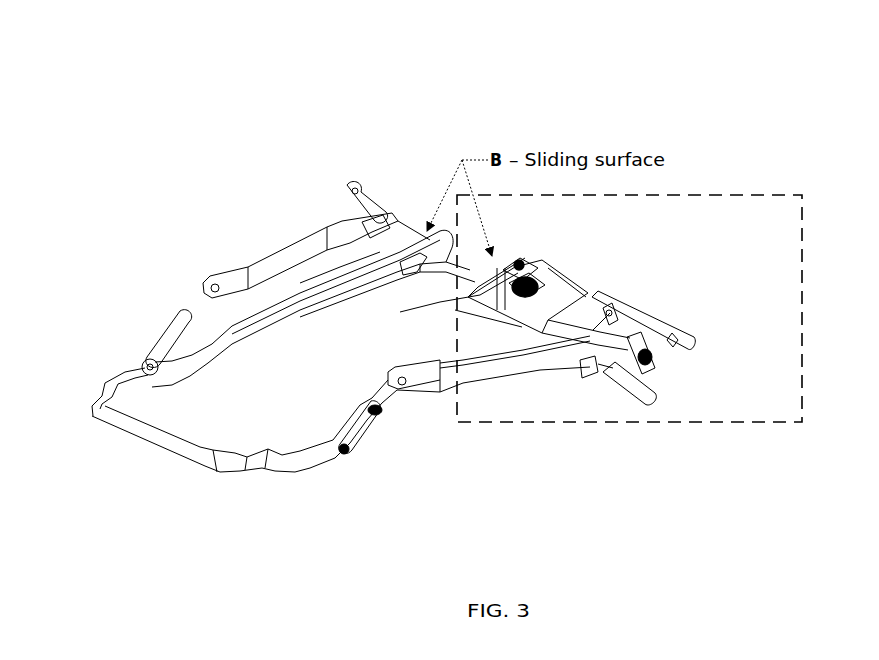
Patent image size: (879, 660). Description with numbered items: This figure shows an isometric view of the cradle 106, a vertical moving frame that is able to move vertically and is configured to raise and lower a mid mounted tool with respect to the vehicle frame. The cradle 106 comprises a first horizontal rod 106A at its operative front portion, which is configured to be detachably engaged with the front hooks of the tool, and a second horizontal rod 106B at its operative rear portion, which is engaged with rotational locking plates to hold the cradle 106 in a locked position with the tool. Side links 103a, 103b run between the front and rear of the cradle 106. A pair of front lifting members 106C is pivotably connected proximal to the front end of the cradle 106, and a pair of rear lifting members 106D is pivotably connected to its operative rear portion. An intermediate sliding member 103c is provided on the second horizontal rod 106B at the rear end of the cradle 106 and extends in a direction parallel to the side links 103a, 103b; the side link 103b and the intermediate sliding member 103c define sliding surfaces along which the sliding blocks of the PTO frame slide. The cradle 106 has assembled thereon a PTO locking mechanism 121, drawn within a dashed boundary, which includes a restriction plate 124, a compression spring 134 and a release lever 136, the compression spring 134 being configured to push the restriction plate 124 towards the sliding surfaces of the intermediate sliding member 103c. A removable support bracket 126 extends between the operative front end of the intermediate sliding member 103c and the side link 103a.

The cradle 106 is at (343, 96).
The first horizontal rod 106A is at (153, 443).
The second horizontal rod 106B is at (397, 275).
The front lifting members 106C is at (150, 346).
The rear lifting members 106D is at (245, 265).
The side link 103a is at (385, 413).
The side link 103b is at (253, 325).
The intermediate sliding member 103c is at (452, 297).
The PTO locking mechanism 121 is at (677, 190).
The restriction plate 124 is at (520, 262).
The compression spring 134 is at (575, 292).
The release lever 136 is at (585, 297).
The removable support bracket 126 is at (483, 332).